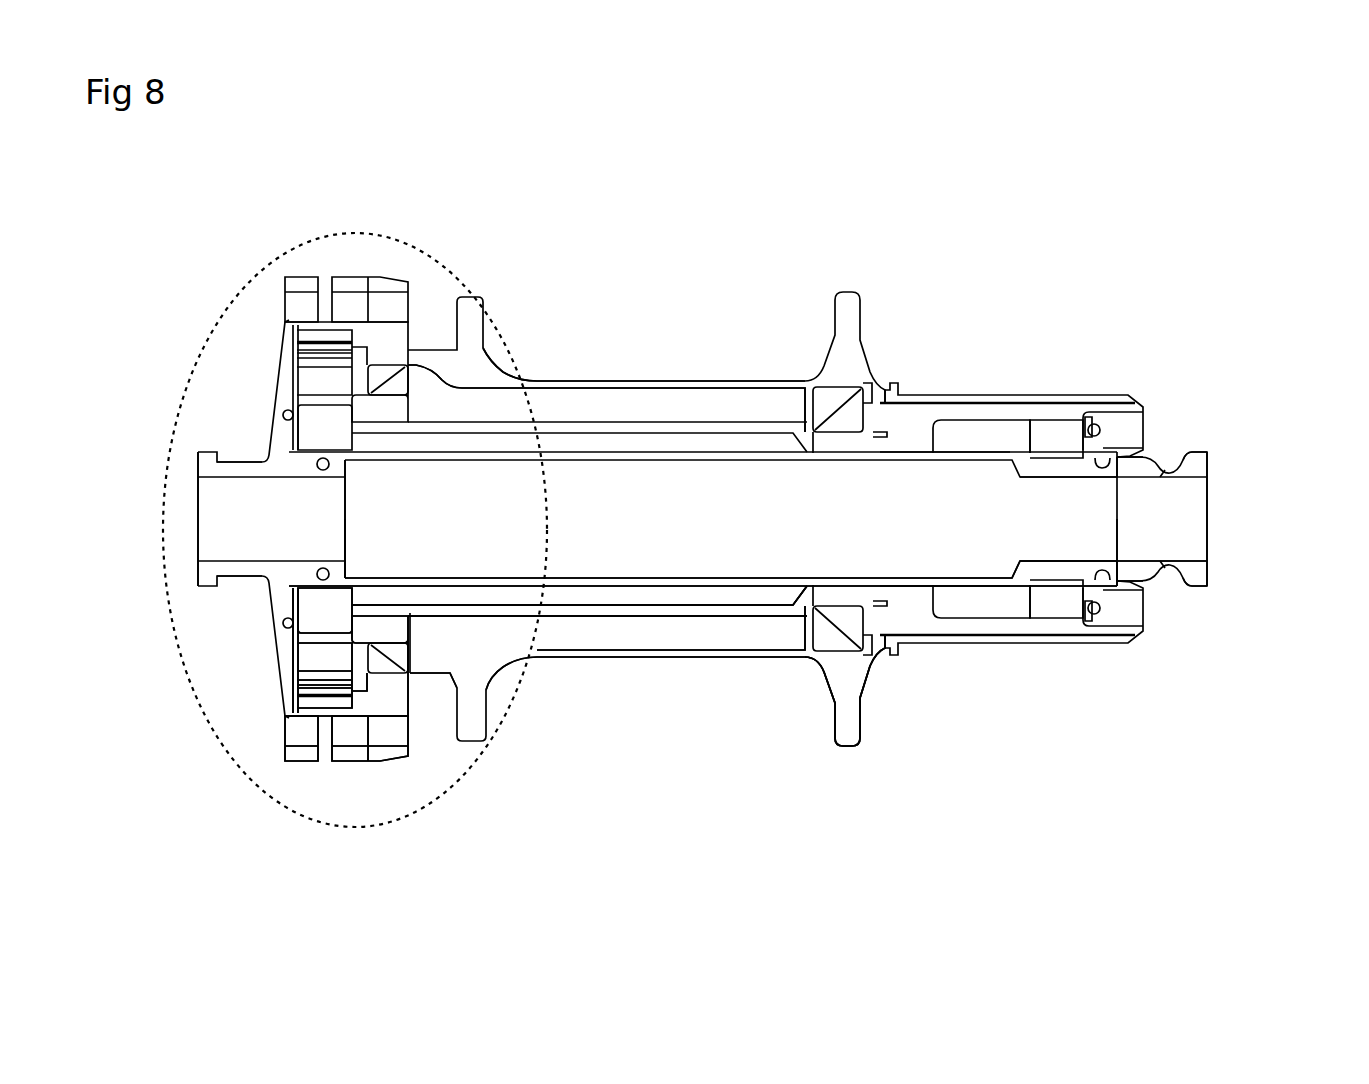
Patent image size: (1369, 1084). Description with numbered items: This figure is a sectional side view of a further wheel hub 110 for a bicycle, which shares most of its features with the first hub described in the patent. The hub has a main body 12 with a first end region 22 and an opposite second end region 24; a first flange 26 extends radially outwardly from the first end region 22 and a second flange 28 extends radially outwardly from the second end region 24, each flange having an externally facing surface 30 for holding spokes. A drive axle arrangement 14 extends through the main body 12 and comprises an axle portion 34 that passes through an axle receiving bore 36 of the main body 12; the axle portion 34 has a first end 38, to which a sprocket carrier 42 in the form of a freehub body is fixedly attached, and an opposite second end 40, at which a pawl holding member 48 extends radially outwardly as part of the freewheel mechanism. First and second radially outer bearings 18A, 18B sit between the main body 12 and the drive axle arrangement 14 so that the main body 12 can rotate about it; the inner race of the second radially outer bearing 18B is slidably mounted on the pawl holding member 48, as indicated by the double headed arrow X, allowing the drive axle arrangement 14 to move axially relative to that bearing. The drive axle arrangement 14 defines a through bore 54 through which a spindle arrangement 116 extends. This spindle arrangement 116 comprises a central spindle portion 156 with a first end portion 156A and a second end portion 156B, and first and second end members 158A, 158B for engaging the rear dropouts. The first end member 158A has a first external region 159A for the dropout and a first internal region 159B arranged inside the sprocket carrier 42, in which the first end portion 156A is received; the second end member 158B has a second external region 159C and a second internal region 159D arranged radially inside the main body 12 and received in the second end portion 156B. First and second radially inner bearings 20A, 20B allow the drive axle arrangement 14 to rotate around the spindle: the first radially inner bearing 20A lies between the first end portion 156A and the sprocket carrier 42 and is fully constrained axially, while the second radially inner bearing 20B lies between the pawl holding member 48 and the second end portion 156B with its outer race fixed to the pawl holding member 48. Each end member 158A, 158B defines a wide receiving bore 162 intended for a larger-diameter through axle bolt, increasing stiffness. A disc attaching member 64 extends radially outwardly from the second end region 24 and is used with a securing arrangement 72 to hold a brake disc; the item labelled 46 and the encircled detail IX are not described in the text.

The main body 12 is at (663, 380).
The drive axle arrangement 14 is at (767, 617).
The first radially outer bearing 18A is at (833, 410).
The second radially outer bearing 18B is at (391, 375).
The first radially inner bearing 20A is at (1072, 432).
The second radially inner bearing 20B is at (307, 423).
The first end region 22 is at (862, 665).
The second end region 24 is at (432, 350).
The first flange 26 is at (848, 727).
The second flange 28 is at (474, 722).
The externally facing surface 30 is at (845, 295).
The axle portion 34 is at (684, 613).
The axle receiving bore 36 is at (585, 650).
The first end 38 is at (905, 605).
The second end 40 is at (393, 613).
The sprocket carrier 42 is at (1042, 393).
The sprocket support member 46 is at (297, 278).
The pawl holding member 48 is at (310, 387).
The through bore 54 is at (565, 432).
The disc attaching member 64 is at (382, 762).
The securing arrangement 72 is at (280, 657).
The wheel hub 110 is at (597, 333).
The spindle arrangement 116 is at (655, 587).
The central spindle portion 156 is at (920, 505).
The first end portion 156A is at (1070, 570).
The second end portion 156B is at (316, 590).
The first end member 158A is at (1200, 457).
The second end member 158B is at (208, 455).
The first external region 159A is at (1192, 580).
The first internal region 159B is at (1123, 587).
The second external region 159C is at (240, 570).
The second internal region 159D is at (350, 478).
The receiving bore 162 is at (250, 477).
The double headed arrow X is at (420, 408).
The detail circle IX is at (232, 748).